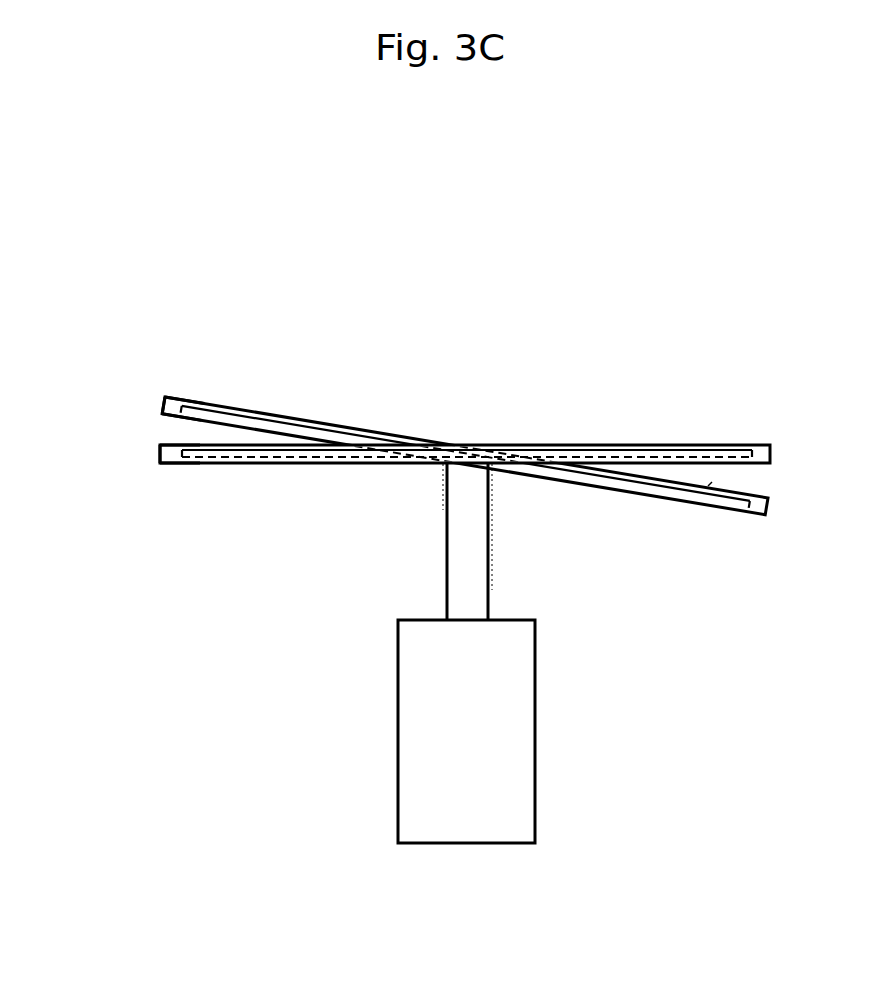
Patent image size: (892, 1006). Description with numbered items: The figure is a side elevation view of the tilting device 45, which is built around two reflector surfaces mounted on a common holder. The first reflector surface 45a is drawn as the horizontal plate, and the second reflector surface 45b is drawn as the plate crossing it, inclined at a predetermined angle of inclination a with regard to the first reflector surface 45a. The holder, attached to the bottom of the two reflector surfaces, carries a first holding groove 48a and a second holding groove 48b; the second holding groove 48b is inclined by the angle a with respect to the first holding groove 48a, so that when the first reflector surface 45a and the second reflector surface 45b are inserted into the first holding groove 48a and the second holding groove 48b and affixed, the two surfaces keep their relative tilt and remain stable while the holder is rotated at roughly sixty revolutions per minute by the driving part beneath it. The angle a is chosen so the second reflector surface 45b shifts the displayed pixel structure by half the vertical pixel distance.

The tilting device 45 is at (173, 342).
The first reflector surface 45a is at (439, 454).
The second reflector surface 45b is at (407, 488).
The first holding groove 48a is at (176, 464).
The second holding groove 48b is at (167, 416).
The angle of inclination a is at (715, 464).